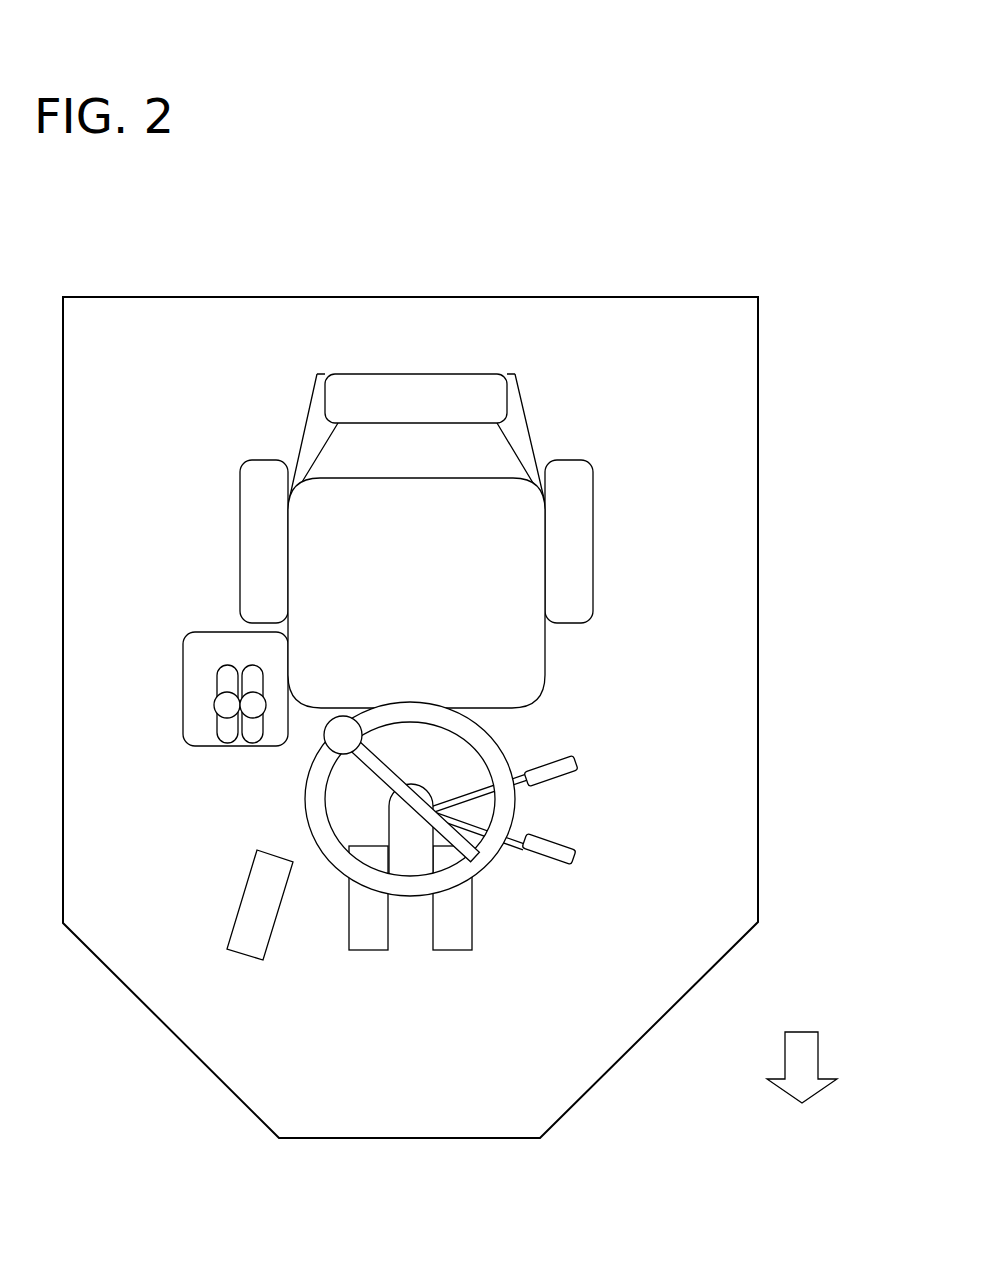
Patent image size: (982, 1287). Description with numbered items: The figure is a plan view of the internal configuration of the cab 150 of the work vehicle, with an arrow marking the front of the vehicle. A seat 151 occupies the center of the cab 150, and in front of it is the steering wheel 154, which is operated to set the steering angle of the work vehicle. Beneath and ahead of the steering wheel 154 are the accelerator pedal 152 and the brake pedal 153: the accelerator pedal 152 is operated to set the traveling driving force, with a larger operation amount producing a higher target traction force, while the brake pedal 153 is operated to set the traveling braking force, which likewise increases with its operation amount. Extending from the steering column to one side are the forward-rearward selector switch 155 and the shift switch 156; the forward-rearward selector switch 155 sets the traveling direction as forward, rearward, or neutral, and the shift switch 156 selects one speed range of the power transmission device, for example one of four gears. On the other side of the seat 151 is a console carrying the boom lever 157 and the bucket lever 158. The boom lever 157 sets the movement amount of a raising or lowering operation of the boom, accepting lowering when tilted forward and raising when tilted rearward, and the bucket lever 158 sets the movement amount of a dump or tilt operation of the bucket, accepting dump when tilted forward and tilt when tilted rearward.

The cab 150 is at (580, 256).
The seat 151 is at (432, 373).
The accelerator pedal 152 is at (245, 895).
The brake pedal 153 is at (368, 952).
The steering wheel 154 is at (488, 874).
The forward-rearward selector switch 155 is at (579, 858).
The shift switch 156 is at (578, 769).
The boom lever 157 is at (215, 704).
The bucket lever 158 is at (253, 719).